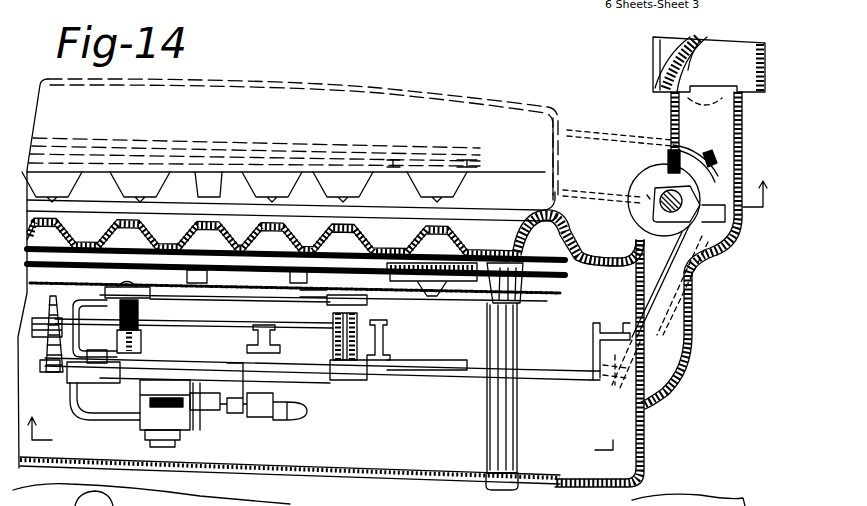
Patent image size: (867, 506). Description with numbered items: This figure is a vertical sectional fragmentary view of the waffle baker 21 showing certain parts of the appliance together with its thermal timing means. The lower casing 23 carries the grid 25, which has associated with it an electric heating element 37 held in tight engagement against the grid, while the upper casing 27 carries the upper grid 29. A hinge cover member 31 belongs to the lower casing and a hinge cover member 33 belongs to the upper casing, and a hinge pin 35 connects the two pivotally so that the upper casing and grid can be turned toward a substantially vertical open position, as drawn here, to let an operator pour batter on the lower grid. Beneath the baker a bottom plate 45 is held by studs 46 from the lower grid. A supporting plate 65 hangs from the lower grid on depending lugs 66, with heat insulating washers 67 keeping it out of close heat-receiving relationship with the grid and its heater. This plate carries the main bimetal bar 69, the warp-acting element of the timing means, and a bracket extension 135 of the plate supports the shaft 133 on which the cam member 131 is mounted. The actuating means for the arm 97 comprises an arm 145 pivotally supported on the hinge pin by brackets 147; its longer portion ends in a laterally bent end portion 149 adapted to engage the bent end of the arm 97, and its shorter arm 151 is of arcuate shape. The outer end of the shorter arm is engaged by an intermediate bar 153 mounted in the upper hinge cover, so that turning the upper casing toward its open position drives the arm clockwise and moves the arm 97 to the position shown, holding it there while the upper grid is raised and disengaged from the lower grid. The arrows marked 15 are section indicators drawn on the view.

The section line 15 is at (399, 300).
The waffle baker 21 is at (715, 419).
The lower casing 23 is at (640, 453).
The grid 25 is at (463, 237).
The upper casing 27 is at (762, 62).
The upper grid 29 is at (704, 52).
The hinge cover member 31 is at (673, 377).
The hinge cover member 33 is at (742, 118).
The hinge pin 35 is at (727, 224).
The electric heating element 37 is at (525, 275).
The bottom plate 45 is at (393, 476).
The studs 46 is at (517, 343).
The supporting plate 65 is at (213, 350).
The depending lugs 66 is at (140, 340).
The heat insulating washers 67 is at (152, 297).
The main bimetal bar 69 is at (143, 423).
The arm 97 is at (548, 378).
The cam member 131 is at (45, 334).
The shaft 133 is at (37, 353).
The bracket extension 135 is at (105, 285).
The arm 145 is at (668, 325).
The brackets 147 is at (653, 217).
The laterally bent end portion 149 is at (613, 330).
The shorter arm 151 is at (710, 148).
The intermediate bar 153 is at (672, 113).